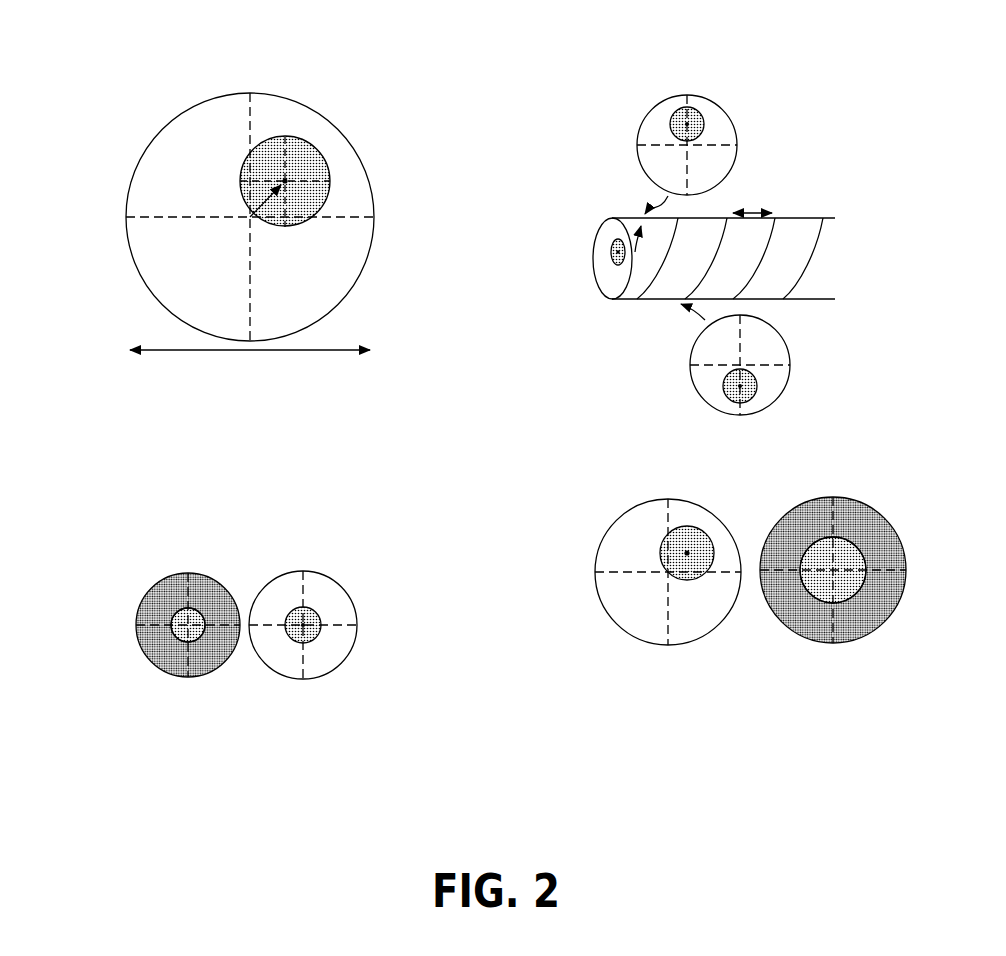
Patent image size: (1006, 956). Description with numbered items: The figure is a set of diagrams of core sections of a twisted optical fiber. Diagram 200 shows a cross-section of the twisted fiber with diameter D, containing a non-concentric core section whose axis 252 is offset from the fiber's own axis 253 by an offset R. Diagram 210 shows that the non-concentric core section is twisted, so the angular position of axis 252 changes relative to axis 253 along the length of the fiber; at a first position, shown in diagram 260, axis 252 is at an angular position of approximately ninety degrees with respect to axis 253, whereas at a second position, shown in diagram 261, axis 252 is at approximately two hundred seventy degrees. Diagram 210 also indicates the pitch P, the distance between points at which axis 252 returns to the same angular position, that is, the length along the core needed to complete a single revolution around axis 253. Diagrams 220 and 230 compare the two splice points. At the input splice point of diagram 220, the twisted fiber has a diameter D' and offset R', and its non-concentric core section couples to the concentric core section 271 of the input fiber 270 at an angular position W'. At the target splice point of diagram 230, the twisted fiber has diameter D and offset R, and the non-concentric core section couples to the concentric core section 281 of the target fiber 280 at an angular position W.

The diagram 200 is at (160, 60).
The diagram 210 is at (565, 67).
The diagram 220 is at (128, 490).
The diagram 230 is at (565, 465).
The axis 252 is at (293, 177).
The axis 253 is at (247, 221).
The diagram 260 is at (670, 84).
The diagram 261 is at (774, 338).
The input fiber 270 is at (225, 582).
The concentric core section 271 is at (182, 608).
The target fiber 280 is at (880, 632).
The concentric core section 281 is at (868, 553).